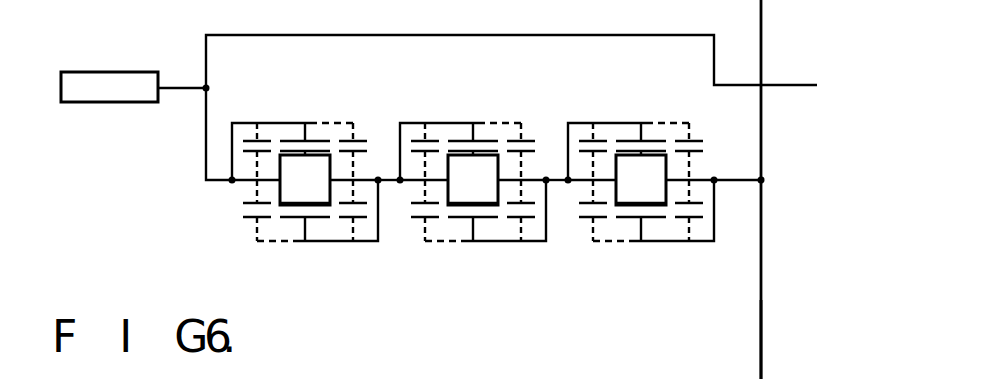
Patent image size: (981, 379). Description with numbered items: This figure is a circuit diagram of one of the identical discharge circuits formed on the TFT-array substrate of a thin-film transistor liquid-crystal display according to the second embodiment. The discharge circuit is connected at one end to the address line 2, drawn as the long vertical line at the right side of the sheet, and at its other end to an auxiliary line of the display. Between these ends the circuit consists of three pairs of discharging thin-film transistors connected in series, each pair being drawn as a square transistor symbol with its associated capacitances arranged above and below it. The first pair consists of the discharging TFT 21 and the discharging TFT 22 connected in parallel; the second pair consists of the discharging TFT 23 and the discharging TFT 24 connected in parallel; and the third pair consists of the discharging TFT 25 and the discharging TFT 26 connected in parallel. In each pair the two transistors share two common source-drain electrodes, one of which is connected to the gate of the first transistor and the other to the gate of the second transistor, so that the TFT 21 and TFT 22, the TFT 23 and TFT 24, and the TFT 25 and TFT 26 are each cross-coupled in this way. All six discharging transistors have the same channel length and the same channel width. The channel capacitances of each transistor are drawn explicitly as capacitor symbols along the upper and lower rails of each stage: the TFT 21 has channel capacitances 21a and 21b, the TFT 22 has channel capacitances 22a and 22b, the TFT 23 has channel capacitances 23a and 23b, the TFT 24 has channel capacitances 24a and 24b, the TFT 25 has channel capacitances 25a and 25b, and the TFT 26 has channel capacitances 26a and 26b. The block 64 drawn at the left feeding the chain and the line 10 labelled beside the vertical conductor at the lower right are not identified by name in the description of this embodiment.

The address line 2 is at (783, 88).
The semiconductor substrate / chip line 10 is at (762, 325).
The control circuit 64 is at (112, 104).
The discharging TFT 21 is at (298, 135).
The channel capacitance 21a is at (251, 135).
The channel capacitance 21b is at (357, 135).
The discharging TFT 22 is at (295, 222).
The channel capacitance 22a is at (246, 222).
The channel capacitance 22b is at (361, 222).
The discharging TFT 23 is at (466, 135).
The channel capacitance 23a is at (415, 135).
The channel capacitance 23b is at (530, 135).
The discharging TFT 24 is at (478, 222).
The channel capacitance 24a is at (418, 222).
The channel capacitance 24b is at (527, 222).
The discharging TFT 25 is at (637, 128).
The channel capacitance 25a is at (590, 135).
The channel capacitance 25b is at (697, 135).
The discharging TFT 26 is at (632, 222).
The channel capacitance 26a is at (583, 222).
The channel capacitance 26b is at (700, 222).